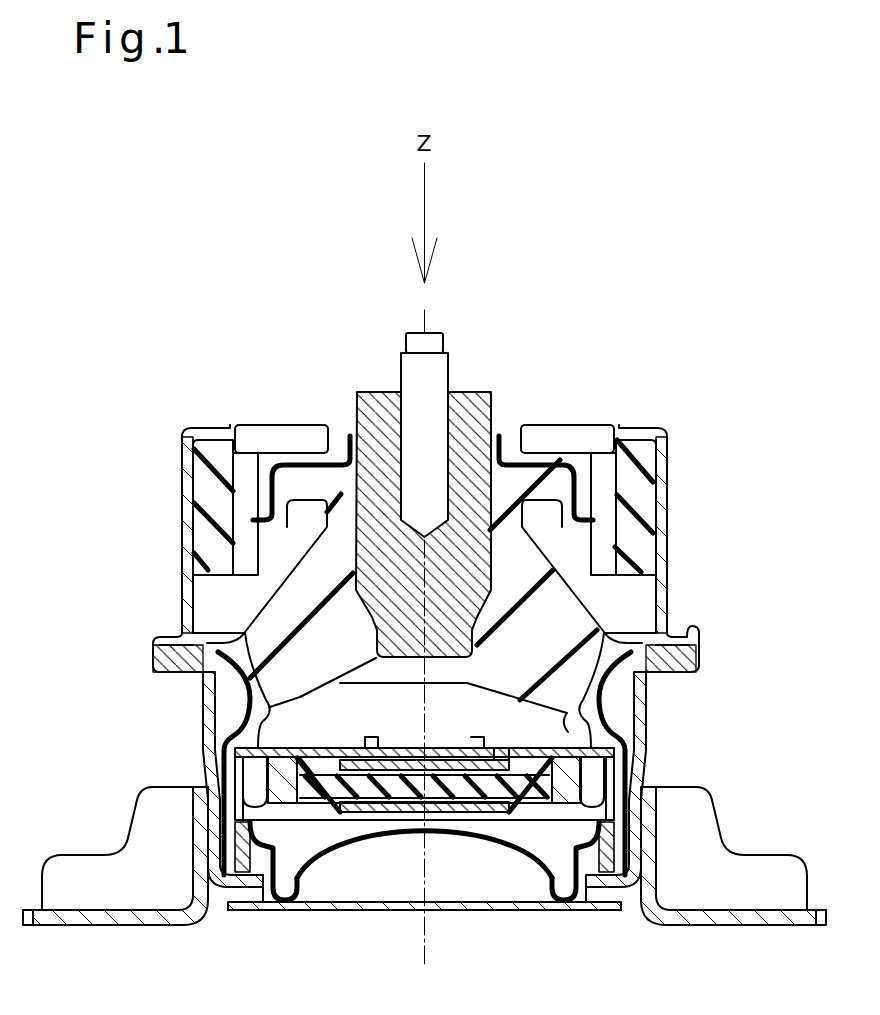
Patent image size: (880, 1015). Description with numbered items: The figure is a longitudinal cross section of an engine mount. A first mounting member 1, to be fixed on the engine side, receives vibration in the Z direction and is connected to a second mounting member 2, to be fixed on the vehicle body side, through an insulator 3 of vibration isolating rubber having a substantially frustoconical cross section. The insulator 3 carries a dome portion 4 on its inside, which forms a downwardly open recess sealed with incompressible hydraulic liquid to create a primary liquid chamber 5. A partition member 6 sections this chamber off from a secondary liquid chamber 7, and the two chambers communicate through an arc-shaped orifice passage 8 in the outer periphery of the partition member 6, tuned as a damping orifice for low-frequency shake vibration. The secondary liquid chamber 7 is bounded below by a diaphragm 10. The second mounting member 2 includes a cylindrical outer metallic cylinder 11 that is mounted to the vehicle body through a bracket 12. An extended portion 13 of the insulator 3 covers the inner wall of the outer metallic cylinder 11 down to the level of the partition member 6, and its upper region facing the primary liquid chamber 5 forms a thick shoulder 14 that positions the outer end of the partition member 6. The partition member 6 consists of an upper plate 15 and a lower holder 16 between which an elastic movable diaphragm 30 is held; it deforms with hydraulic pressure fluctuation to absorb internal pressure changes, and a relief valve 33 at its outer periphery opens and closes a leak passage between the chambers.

The first mounting member 1 is at (478, 398).
The second mounting member 2 is at (178, 722).
The insulator 3 is at (580, 628).
The dome portion 4 is at (585, 712).
The primary liquid chamber 5 is at (441, 723).
The partition member 6 is at (411, 735).
The secondary liquid chamber 7 is at (555, 852).
The orifice passage 8 is at (593, 773).
The diaphragm 10 is at (307, 883).
The outer metallic cylinder 11 is at (206, 778).
The bracket 12 is at (200, 848).
The extended portion 13 is at (622, 790).
The thick shoulder 14 is at (603, 740).
The upper plate 15 is at (500, 752).
The lower holder 16 is at (282, 822).
The elastic movable diaphragm 30 is at (443, 790).
The relief valve 33 is at (307, 773).